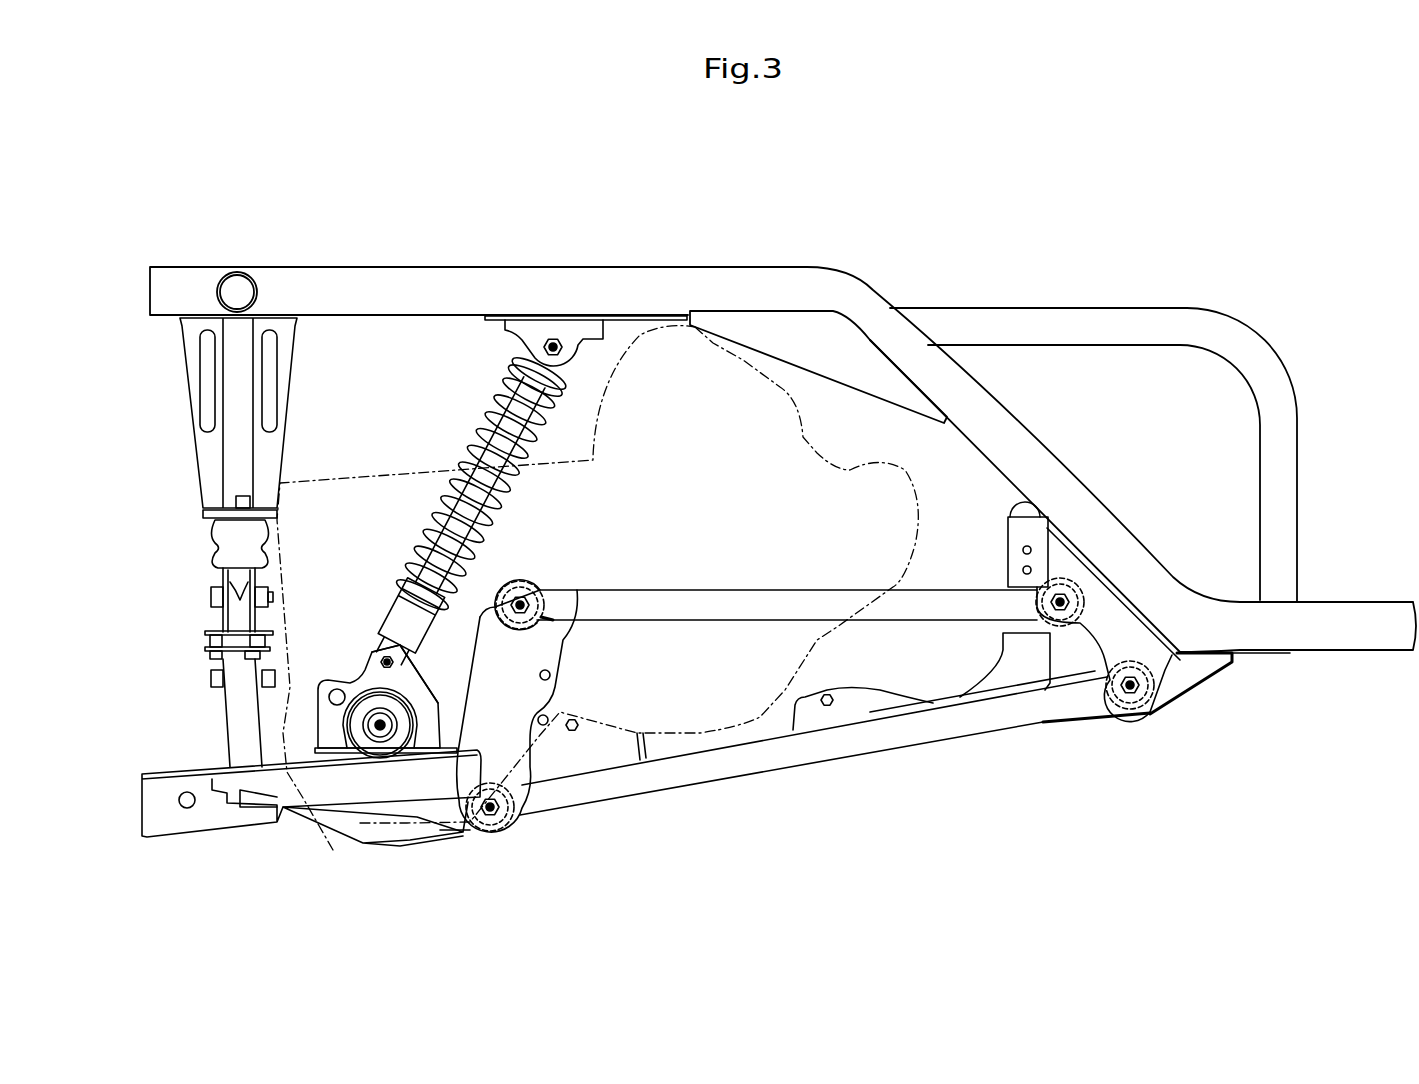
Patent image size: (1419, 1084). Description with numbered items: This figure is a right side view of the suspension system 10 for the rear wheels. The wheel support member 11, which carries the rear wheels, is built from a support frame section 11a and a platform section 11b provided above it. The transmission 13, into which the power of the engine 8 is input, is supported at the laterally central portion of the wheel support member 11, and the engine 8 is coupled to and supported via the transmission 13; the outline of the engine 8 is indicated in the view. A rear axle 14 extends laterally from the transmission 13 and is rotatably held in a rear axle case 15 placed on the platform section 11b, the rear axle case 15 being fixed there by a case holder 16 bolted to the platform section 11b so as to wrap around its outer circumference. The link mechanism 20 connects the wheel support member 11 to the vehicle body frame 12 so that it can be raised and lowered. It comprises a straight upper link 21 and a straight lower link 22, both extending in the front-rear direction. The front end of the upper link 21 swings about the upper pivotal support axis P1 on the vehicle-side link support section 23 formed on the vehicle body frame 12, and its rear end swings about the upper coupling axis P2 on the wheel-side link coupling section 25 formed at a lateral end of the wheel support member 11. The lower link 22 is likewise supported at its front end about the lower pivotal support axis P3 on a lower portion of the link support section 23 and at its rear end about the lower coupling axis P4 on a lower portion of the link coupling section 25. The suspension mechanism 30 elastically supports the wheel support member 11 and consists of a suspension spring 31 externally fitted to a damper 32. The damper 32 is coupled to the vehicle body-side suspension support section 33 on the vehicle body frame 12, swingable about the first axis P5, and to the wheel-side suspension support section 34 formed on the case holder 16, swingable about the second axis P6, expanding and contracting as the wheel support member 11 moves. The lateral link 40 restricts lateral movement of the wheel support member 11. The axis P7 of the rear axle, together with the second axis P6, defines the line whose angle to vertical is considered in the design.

The engine 8 is at (860, 468).
The suspension system 10 is at (1267, 707).
The wheel support member 11 is at (281, 815).
The support frame section 11a is at (270, 782).
The platform section 11b is at (190, 770).
The vehicle body frame 12 is at (1020, 437).
The transmission 13 is at (323, 480).
The rear axle 14 is at (400, 730).
The rear axle case 15 is at (363, 747).
The case holder 16 is at (353, 685).
The link mechanism 20 is at (897, 777).
The upper link 21 is at (727, 590).
The lower link 22 is at (793, 757).
The vehicle-side link support section 23 is at (1127, 622).
The wheel-side link coupling section 25 is at (540, 663).
The suspension mechanism 30 is at (405, 350).
The suspension spring 31 is at (505, 492).
The damper 32 is at (493, 417).
The vehicle body-side suspension support section 33 is at (542, 330).
The wheel-side suspension support section 34 is at (418, 688).
The lateral link 40 is at (237, 617).
The upper pivotal support axis P1 is at (1077, 578).
The upper coupling axis P2 is at (540, 583).
The lower pivotal support axis P3 is at (1148, 695).
The lower coupling axis P4 is at (487, 785).
The first axis P5 is at (557, 343).
The second axis P6 is at (380, 658).
The axis of the rear axle P7 is at (417, 682).